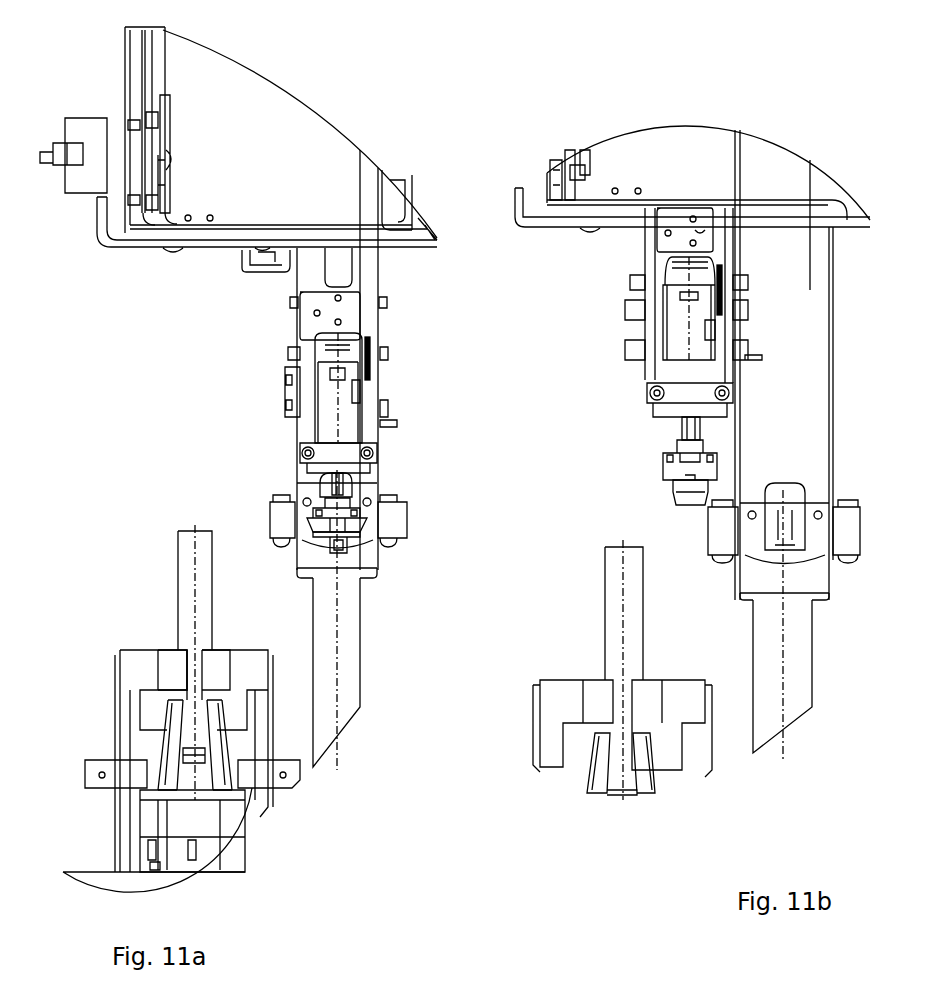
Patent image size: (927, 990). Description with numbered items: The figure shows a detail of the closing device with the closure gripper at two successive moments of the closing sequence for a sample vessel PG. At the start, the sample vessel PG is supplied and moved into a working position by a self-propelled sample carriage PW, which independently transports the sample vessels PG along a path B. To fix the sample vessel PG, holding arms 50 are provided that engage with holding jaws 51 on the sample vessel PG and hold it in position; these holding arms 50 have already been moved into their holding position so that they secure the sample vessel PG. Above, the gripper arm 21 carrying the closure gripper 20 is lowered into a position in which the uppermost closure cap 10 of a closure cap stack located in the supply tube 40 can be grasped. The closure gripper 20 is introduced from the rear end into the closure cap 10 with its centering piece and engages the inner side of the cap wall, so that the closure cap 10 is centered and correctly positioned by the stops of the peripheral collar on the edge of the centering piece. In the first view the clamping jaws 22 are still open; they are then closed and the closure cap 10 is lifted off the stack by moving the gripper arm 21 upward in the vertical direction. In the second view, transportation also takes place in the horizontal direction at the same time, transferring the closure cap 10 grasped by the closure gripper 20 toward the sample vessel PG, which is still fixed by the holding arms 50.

In FIG. 11A, the closure cap 10 is at (352, 537).
In FIG. 11B, the closure cap 10 is at (682, 497).
In FIG. 11A, the closure gripper 20 is at (357, 515).
In FIG. 11B, the closure gripper 20 is at (673, 473).
In FIG. 11A, the gripper arm 21 is at (342, 395).
In FIG. 11B, the gripper arm 21 is at (675, 330).
In FIG. 11A, the clamping jaws 22 is at (310, 524).
In FIG. 11A, the supply tube 40 is at (345, 612).
In FIG. 11B, the supply tube 40 is at (790, 653).
In FIG. 11A, the holding arms 50 is at (135, 670).
In FIG. 11B, the holding arms 50 is at (565, 707).
In FIG. 11A, the holding jaws 51 is at (170, 667).
In FIG. 11A, the sample vessel PG is at (186, 585).
In FIG. 11B, the sample vessel PG is at (618, 567).
In FIG. 11A, the sample carriage PW is at (157, 815).
In FIG. 11A, the path B is at (100, 870).